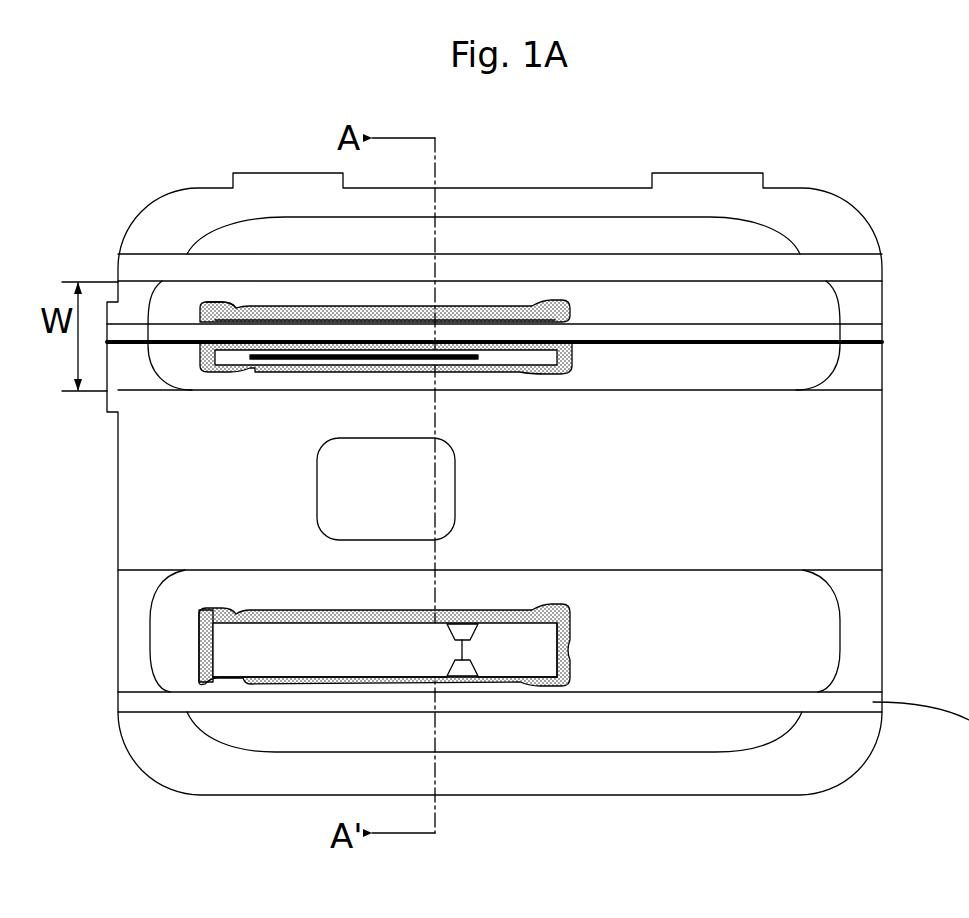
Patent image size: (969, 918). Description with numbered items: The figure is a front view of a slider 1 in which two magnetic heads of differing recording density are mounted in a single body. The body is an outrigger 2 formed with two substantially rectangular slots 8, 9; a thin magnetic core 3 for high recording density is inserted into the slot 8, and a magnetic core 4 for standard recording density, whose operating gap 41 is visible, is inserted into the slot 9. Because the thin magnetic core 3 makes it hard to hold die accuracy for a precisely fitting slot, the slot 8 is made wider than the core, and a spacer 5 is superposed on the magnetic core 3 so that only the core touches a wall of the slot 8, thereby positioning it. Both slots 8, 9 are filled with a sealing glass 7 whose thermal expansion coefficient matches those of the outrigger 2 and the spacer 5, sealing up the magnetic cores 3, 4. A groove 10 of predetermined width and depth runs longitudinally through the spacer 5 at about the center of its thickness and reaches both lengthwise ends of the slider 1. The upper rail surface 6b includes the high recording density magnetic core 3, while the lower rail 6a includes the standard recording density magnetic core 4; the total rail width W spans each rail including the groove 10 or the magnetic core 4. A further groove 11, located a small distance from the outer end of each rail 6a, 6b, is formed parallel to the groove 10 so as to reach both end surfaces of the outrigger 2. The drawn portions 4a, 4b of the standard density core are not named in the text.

The slider 1 is at (888, 488).
The outrigger 2 is at (802, 215).
The magnetic core 3 is at (257, 367).
The magnetic core 4 is at (215, 678).
The first electrode portion 4a is at (343, 662).
The second electrode portion 4b is at (541, 652).
The operating gap 41 is at (468, 648).
The spacer 5 is at (223, 307).
The rail 6a is at (853, 633).
The rail surface 6b is at (853, 382).
The sealing glass 7 is at (442, 313).
The slot 8 is at (498, 300).
The slot 9 is at (210, 657).
The groove 10 is at (860, 335).
The groove 11 is at (860, 272).